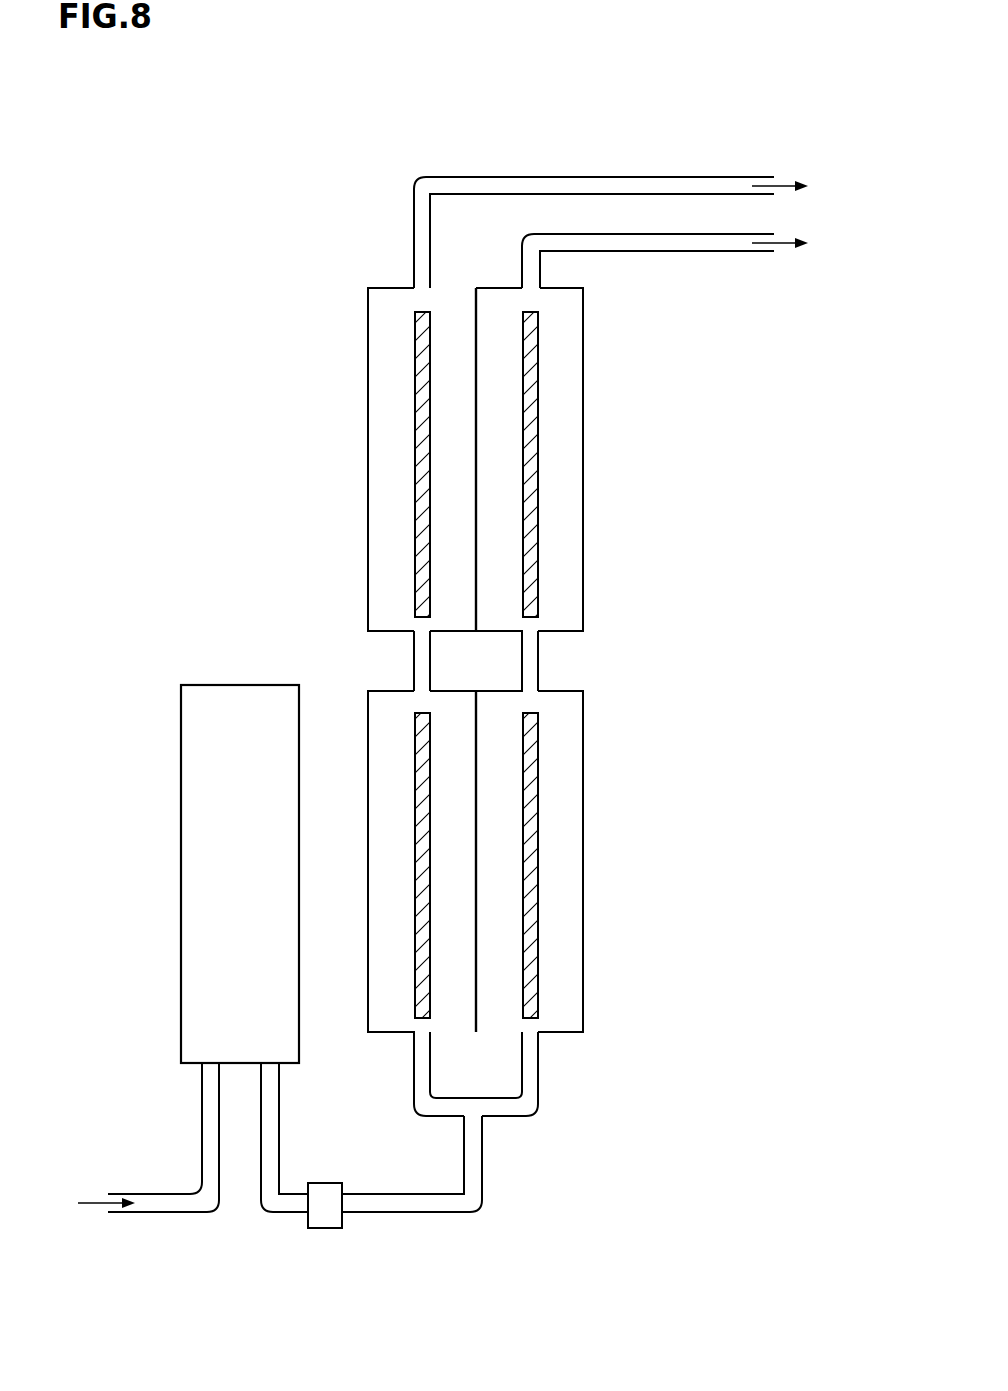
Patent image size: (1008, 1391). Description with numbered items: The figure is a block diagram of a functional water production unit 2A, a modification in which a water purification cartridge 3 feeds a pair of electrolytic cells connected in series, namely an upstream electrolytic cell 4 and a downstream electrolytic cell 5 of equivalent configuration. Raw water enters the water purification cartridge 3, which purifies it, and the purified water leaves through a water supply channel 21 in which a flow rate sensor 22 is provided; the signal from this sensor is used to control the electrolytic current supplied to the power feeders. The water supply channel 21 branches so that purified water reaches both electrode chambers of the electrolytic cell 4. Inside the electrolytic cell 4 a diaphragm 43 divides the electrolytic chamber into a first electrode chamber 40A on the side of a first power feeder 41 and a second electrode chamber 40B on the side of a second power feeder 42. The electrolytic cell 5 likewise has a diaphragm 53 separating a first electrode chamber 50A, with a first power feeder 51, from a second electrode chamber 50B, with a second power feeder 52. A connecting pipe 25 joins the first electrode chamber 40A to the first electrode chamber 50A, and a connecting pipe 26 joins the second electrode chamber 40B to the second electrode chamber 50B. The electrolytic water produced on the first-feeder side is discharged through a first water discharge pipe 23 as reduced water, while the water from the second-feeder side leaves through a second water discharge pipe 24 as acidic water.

The functional water production unit 2A is at (805, 67).
The water purification cartridge 3 is at (228, 683).
The electrolytic cell 4 is at (511, 902).
The electrolytic cell 5 is at (478, 459).
The water supply channel 21 is at (270, 1192).
The flow rate sensor 22 is at (307, 1220).
The first water discharge pipe 23 is at (683, 245).
The second water discharge pipe 24 is at (677, 189).
The connecting pipe 25 is at (528, 663).
The connecting pipe 26 is at (423, 663).
The first electrode chamber 40A is at (558, 785).
The second electrode chamber 40B is at (400, 786).
The first power feeder 41 is at (535, 865).
The second power feeder 42 is at (417, 866).
The diaphragm 43 is at (477, 708).
The first electrode chamber 50A is at (558, 382).
The second electrode chamber 50B is at (393, 383).
The first power feeder 51 is at (530, 465).
The second power feeder 52 is at (415, 466).
The diaphragm 53 is at (476, 306).